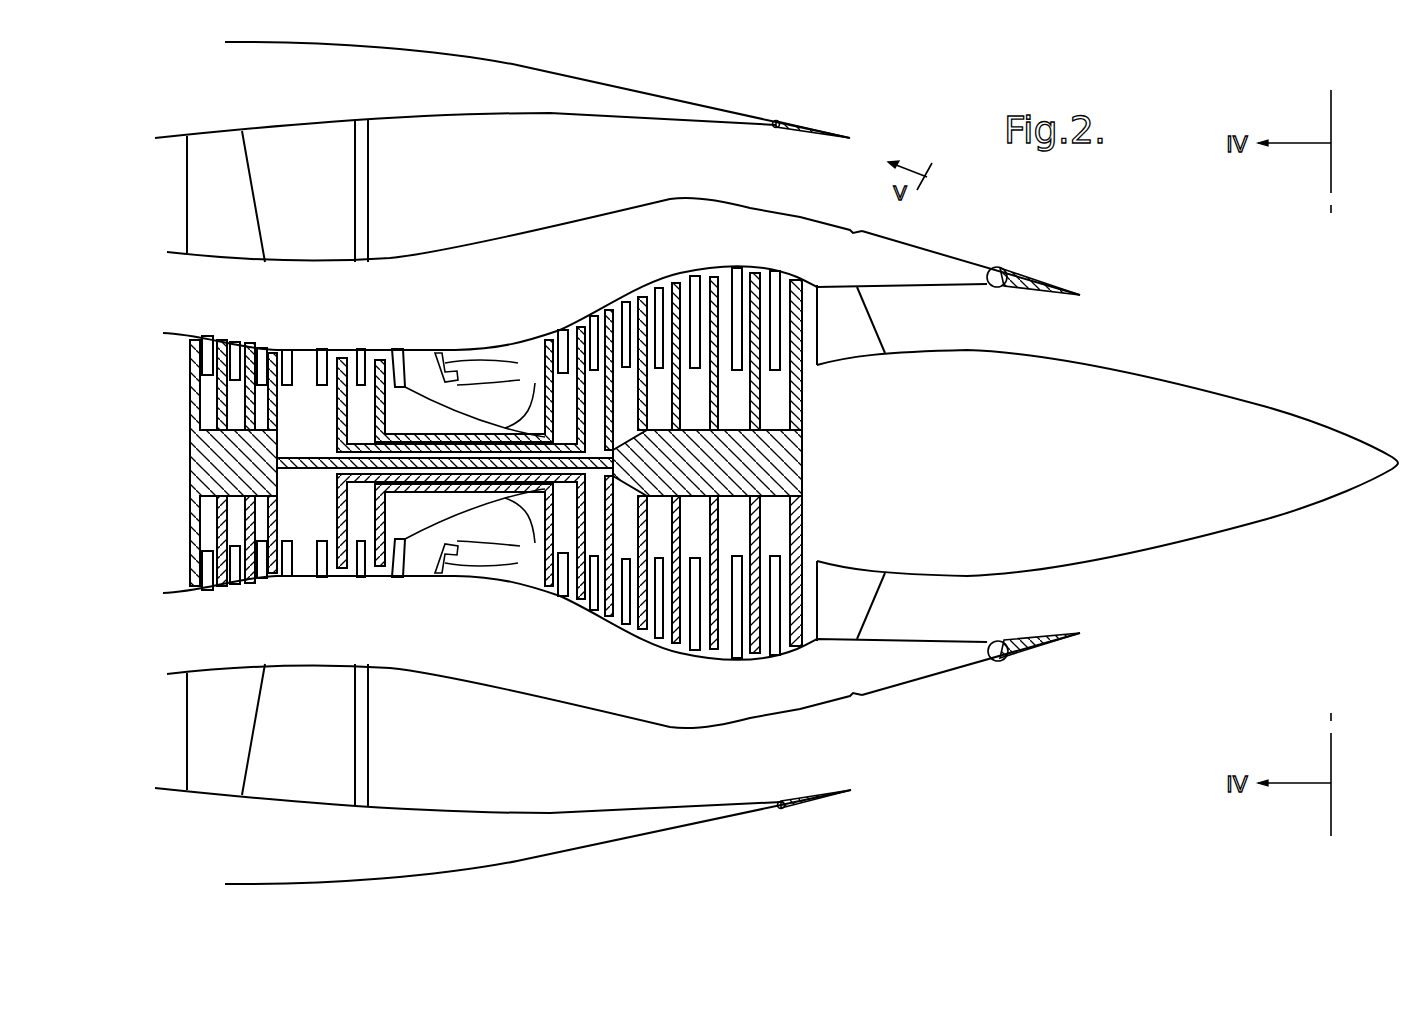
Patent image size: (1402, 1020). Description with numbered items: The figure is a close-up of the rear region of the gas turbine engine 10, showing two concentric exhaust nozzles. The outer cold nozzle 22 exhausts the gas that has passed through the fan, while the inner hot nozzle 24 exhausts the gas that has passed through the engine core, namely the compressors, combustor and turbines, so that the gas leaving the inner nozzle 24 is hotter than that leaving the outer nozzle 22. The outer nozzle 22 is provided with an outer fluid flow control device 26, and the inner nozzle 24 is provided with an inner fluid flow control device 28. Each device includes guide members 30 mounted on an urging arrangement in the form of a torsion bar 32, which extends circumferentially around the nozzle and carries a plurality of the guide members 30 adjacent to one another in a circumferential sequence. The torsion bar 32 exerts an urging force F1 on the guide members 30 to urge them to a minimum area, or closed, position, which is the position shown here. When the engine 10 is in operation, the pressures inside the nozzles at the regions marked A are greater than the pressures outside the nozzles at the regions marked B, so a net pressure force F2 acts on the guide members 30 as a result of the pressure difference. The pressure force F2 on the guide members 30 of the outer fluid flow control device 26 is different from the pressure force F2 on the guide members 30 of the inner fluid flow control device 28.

The gas turbine engine 10 is at (1100, 730).
The outer cold nozzle 22 is at (725, 100).
The inner hot nozzle 24 is at (943, 248).
The outer fluid flow control device 26 is at (857, 137).
The inner fluid flow control device 28 is at (1087, 297).
The guide member 30 is at (802, 133).
The torsion bar 32 is at (770, 128).
The regions inside the nozzles A is at (811, 140).
The regions outside the nozzles B is at (813, 127).
The urging force F1 is at (821, 161).
The net pressure force F2 is at (802, 96).